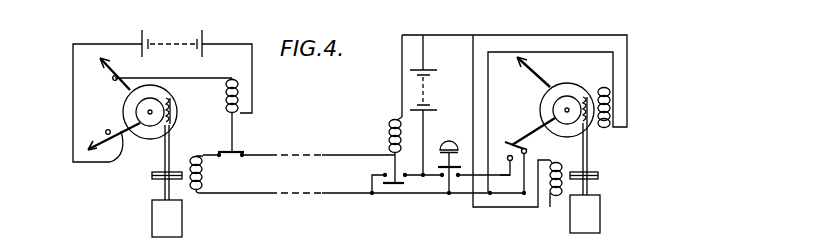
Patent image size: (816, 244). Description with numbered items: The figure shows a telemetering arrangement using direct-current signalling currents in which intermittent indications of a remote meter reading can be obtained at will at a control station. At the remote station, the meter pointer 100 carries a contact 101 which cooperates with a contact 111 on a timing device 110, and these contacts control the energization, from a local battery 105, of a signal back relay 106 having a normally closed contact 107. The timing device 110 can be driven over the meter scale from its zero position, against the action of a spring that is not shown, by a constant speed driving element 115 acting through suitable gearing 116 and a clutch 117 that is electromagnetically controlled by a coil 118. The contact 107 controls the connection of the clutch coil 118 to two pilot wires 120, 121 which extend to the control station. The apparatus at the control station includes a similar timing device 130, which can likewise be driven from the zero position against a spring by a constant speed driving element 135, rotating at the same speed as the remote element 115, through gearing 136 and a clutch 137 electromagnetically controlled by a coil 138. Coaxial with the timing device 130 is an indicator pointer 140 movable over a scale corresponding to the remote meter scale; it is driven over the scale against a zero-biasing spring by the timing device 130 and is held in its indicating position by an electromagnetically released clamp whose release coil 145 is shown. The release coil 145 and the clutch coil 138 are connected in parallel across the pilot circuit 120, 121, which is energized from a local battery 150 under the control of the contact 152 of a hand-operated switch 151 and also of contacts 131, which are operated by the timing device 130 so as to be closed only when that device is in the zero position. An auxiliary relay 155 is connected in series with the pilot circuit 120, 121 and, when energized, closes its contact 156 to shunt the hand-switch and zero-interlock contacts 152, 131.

The remote station meter pointer 100 is at (115, 76).
The contact 101 is at (107, 81).
The local battery 105 is at (175, 36).
The signal back relay 106 is at (226, 98).
The normally closed contact 107 is at (243, 151).
The timing device 110 is at (108, 159).
The contact 111 is at (112, 129).
The constant speed driving element 115 is at (170, 222).
The gearing 116 is at (162, 129).
The clutch 117 is at (152, 177).
The clutch coil 118 is at (203, 178).
The pilot wire 120 is at (313, 155).
The pilot wire 121 is at (313, 193).
The timing device 130 is at (527, 131).
The contacts 131 is at (522, 156).
The constant speed driving element 135 is at (593, 213).
The gearing 136 is at (588, 128).
The clutch 137 is at (598, 177).
The clutch coil 138 is at (552, 192).
The indicator pointer 140 is at (525, 79).
The release coil 145 is at (610, 124).
The local battery 150 is at (427, 90).
The hand-operated switch 151 is at (450, 141).
The contact 152 is at (449, 193).
The auxiliary relay 155 is at (388, 132).
The contact 156 is at (397, 185).